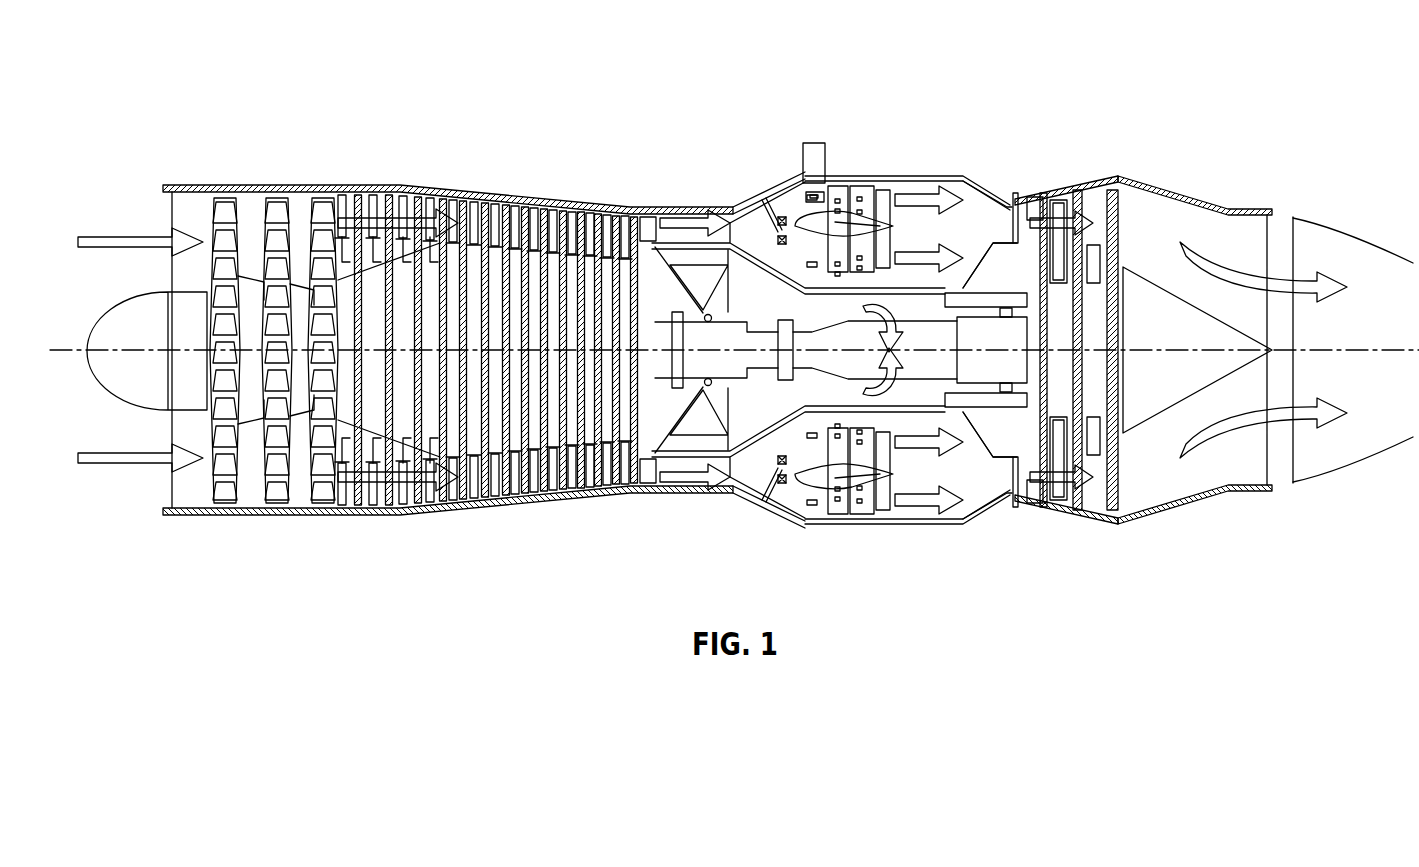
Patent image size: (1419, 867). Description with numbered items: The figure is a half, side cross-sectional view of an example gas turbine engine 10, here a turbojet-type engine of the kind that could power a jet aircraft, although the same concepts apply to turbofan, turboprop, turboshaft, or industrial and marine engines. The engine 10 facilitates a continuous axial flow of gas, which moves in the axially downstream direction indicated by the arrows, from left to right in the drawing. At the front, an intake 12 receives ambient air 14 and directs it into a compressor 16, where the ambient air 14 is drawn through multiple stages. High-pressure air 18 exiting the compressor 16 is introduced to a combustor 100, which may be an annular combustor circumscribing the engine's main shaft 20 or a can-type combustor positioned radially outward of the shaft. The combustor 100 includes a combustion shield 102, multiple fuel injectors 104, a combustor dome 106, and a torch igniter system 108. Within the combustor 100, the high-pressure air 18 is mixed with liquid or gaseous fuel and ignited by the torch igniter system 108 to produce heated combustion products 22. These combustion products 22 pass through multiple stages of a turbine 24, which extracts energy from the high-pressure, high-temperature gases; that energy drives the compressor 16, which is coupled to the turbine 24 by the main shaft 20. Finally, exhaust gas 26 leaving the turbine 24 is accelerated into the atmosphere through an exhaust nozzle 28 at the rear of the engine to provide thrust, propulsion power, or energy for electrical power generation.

The gas turbine engine 10 is at (179, 75).
The intake 12 is at (183, 184).
The ambient air 14 is at (140, 232).
The compressor 16 is at (318, 178).
The high-pressure air 18 is at (686, 222).
The main shaft 20 is at (940, 347).
The combustion products 22 is at (1043, 213).
The turbine 24 is at (1064, 178).
The exhaust gas 26 is at (1302, 285).
The exhaust nozzle 28 is at (1278, 494).
The combustor 100 is at (879, 170).
The combustion shield 102 is at (985, 492).
The fuel injectors 104 is at (775, 502).
The combustor dome 106 is at (780, 512).
The torch igniter system 108 is at (796, 152).